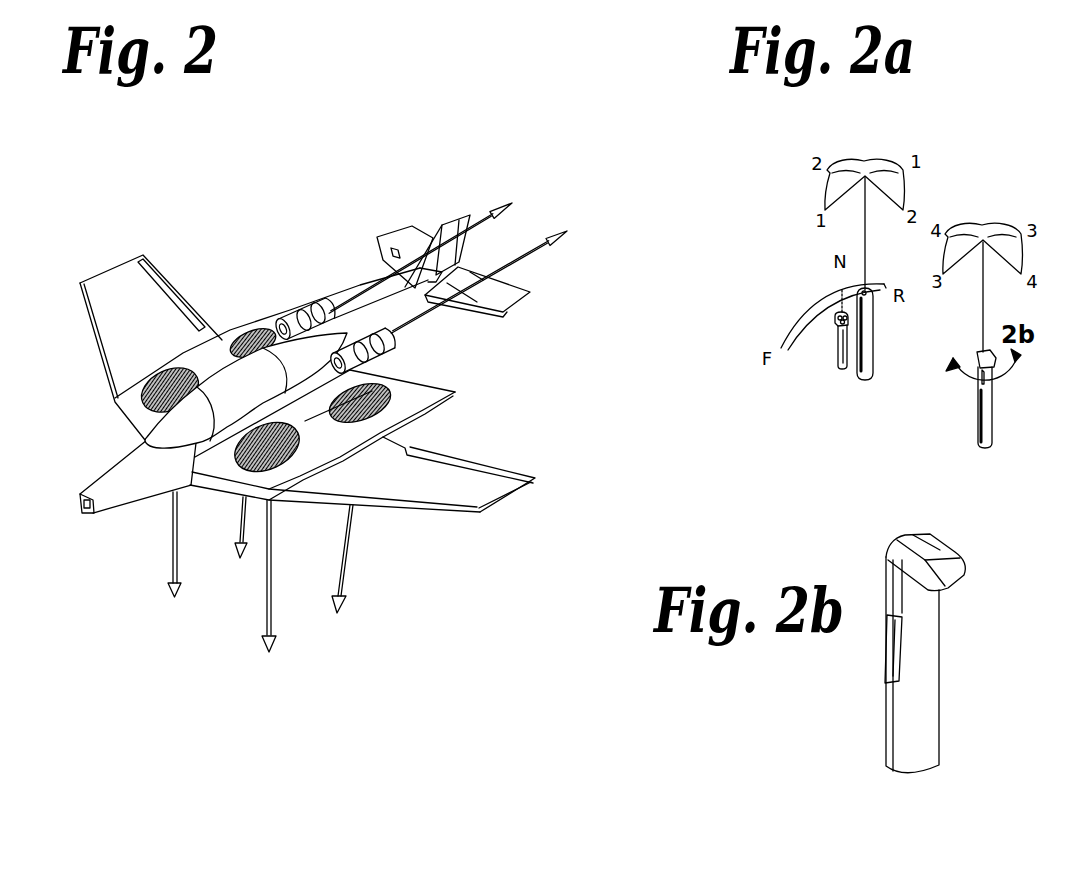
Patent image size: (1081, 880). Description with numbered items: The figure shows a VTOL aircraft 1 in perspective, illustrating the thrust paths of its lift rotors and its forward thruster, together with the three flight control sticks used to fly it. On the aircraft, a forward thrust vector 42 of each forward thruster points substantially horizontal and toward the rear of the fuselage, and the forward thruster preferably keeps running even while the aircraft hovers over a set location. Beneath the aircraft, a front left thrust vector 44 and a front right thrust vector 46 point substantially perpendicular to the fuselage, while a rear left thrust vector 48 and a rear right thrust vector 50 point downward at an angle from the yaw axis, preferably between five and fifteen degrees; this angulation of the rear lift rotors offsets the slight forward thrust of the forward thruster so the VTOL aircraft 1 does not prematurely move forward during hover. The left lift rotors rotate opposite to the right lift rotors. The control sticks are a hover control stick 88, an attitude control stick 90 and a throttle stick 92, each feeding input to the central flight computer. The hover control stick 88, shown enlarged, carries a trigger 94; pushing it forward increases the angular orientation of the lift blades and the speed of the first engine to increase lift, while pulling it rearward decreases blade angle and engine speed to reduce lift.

In FIG. 2, the VTOL aircraft 1 is at (262, 231).
In FIG. 2, the forward thrust vector 42 is at (481, 210).
In FIG. 2, the front left thrust vector 44 is at (273, 602).
In FIG. 2, the front right thrust vector 46 is at (180, 568).
In FIG. 2, the rear left thrust vector 48 is at (340, 547).
In FIG. 2, the rear right thrust vector 50 is at (237, 523).
In FIG. 2A, the hover control stick 88 is at (993, 432).
In FIG. 2B, the hover control stick 88 is at (930, 648).
In FIG. 2A, the attitude control stick 90 is at (872, 376).
In FIG. 2A, the throttle stick 92 is at (837, 352).
In FIG. 2B, the trigger 94 is at (887, 663).